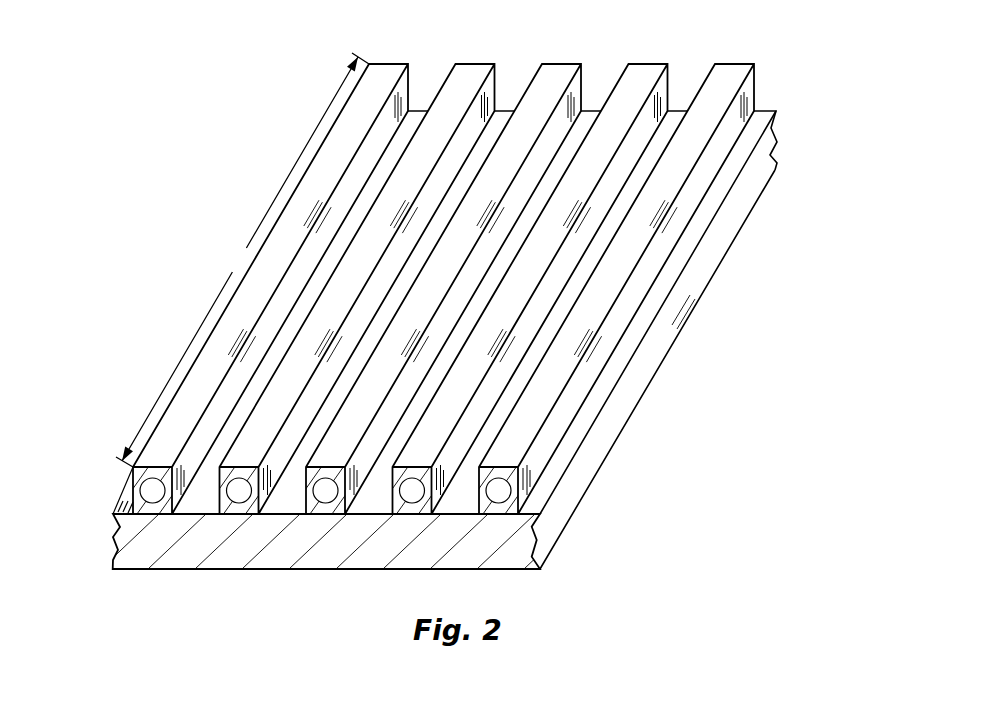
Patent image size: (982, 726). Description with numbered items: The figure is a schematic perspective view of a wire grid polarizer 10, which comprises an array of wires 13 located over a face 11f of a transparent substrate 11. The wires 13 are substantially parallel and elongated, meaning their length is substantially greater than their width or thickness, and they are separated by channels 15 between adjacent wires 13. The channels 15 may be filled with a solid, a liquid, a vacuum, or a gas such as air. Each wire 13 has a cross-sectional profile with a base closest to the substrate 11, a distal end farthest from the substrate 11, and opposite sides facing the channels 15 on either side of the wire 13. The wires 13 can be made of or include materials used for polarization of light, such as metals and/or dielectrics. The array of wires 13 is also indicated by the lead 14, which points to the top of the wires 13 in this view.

The wire grid polarizer 10 is at (158, 208).
The transparent substrate 11 is at (313, 554).
The face of the transparent substrate 11f is at (762, 113).
The wires 13 is at (434, 289).
The fiber array 14 is at (760, 79).
The channels 15 is at (692, 94).